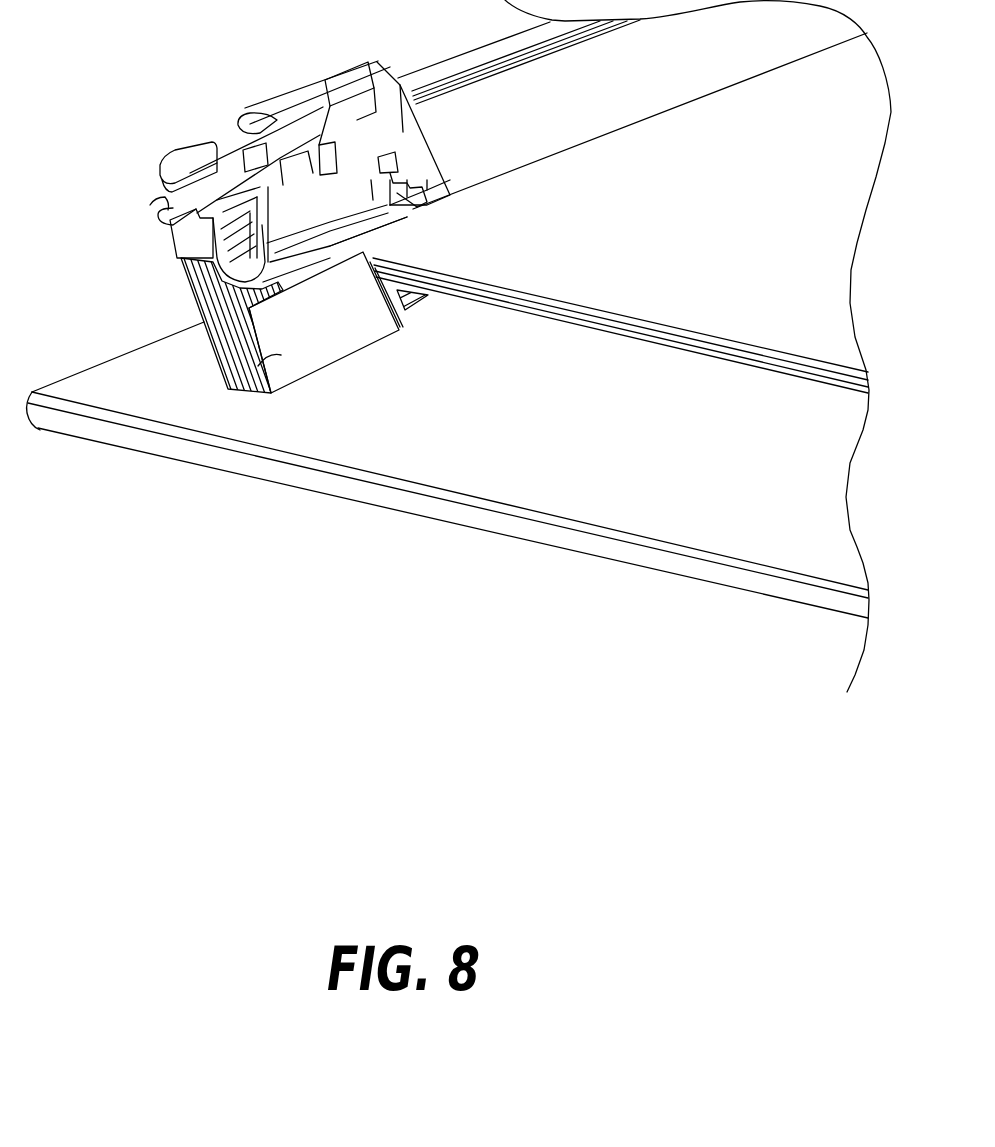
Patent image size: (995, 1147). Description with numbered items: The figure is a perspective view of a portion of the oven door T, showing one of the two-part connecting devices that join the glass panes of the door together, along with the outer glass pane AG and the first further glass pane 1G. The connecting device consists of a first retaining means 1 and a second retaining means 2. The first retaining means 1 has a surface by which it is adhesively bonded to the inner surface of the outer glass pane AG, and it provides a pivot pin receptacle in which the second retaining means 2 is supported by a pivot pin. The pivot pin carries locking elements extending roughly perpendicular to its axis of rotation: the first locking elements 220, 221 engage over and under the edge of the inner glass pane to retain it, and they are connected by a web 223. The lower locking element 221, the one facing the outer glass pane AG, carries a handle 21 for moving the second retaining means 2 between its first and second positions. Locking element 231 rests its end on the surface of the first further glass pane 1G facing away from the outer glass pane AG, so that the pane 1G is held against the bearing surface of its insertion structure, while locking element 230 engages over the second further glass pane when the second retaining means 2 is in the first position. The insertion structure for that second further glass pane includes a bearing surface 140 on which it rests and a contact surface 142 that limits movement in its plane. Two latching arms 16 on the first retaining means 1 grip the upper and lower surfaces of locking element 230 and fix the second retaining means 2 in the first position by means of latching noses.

The first retaining means 1 is at (243, 390).
The first further glass pane 1G is at (667, 299).
The second retaining means 2 is at (185, 163).
The latching arms 16 is at (287, 182).
The handle 21 is at (193, 244).
The first locking element 220 is at (216, 152).
The lower locking element 221 is at (170, 228).
The web 223 is at (183, 200).
The locking element 230 is at (405, 87).
The locking element 231 is at (387, 242).
The bearing surface 140 is at (413, 225).
The contact surface 142 is at (398, 161).
The oven door T is at (293, 492).
The outer glass pane AG is at (407, 501).